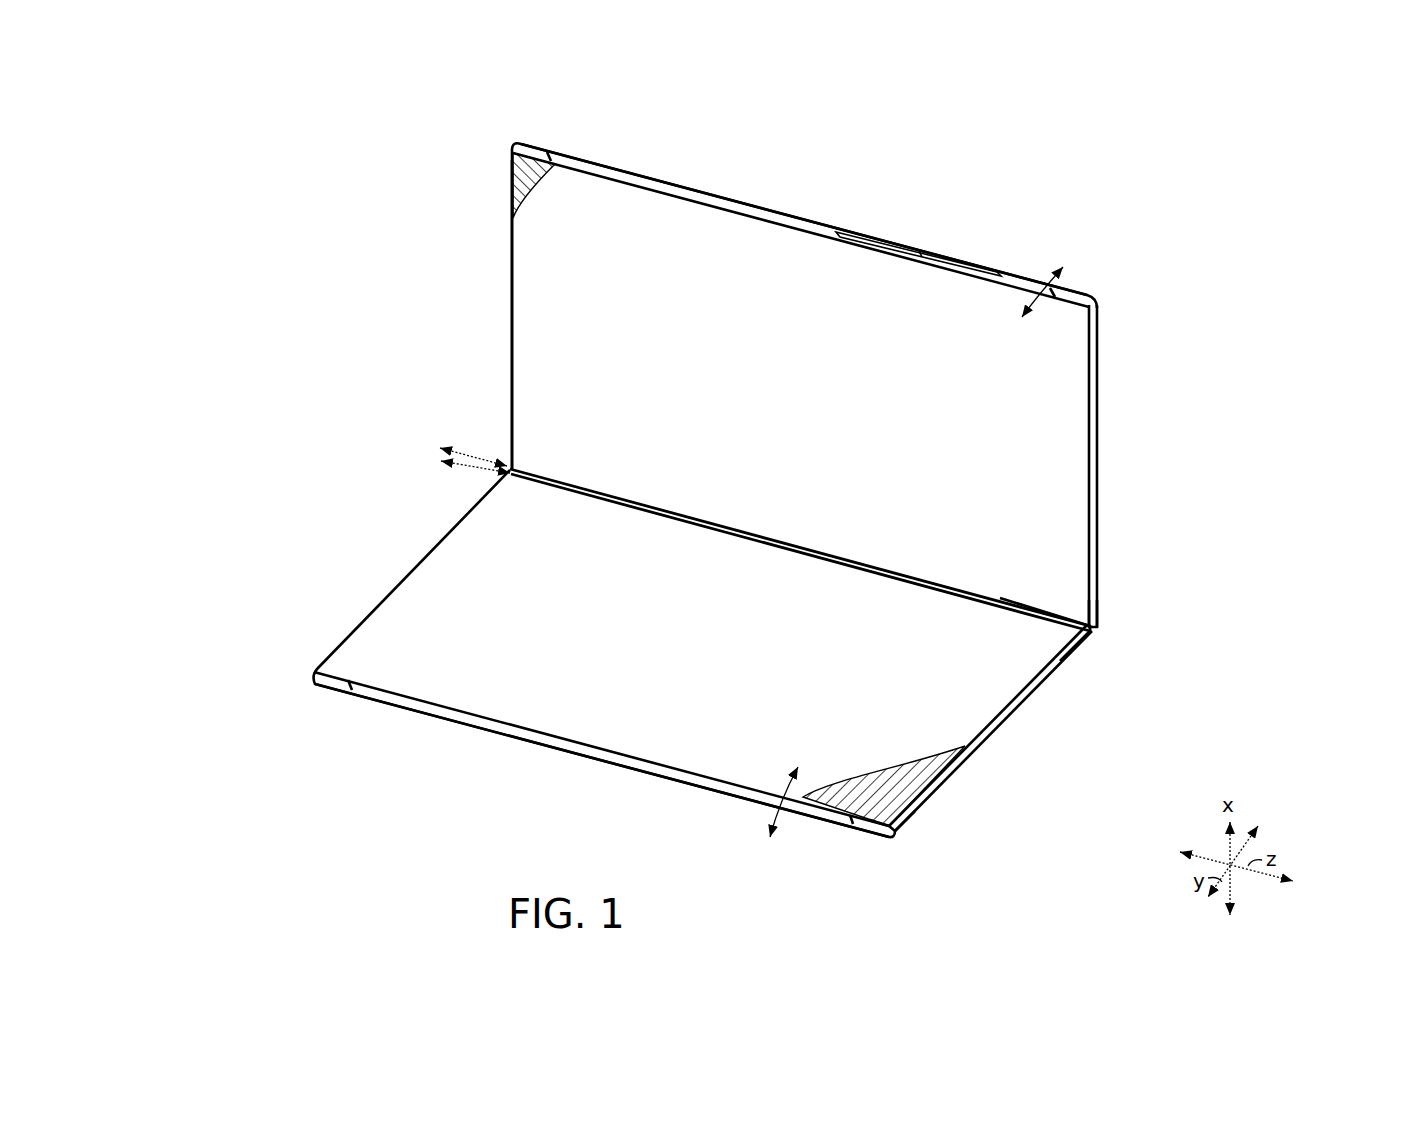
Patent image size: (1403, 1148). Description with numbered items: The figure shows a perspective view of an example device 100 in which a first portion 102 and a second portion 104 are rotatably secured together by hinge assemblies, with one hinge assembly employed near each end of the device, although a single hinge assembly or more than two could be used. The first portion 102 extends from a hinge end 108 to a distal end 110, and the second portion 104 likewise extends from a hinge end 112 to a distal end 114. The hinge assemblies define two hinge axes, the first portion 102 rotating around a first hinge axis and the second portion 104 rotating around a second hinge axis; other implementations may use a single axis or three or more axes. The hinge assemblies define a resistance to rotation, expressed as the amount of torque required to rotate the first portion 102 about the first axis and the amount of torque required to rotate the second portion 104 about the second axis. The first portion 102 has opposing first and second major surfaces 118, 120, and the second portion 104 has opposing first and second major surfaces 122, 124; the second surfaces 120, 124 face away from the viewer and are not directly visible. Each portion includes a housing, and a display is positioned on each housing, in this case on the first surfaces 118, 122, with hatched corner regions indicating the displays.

The device 100 is at (997, 106).
The first portion 102 is at (790, 207).
The second portion 104 is at (370, 608).
The hinge end 108 is at (1097, 623).
The distal end 110 is at (1100, 301).
The hinge end 112 is at (1092, 637).
The distal end 114 is at (903, 833).
The first surface 118 is at (770, 407).
The second surface 120 is at (1009, 271).
The first surface 122 is at (690, 684).
The second surface 124 is at (460, 723).